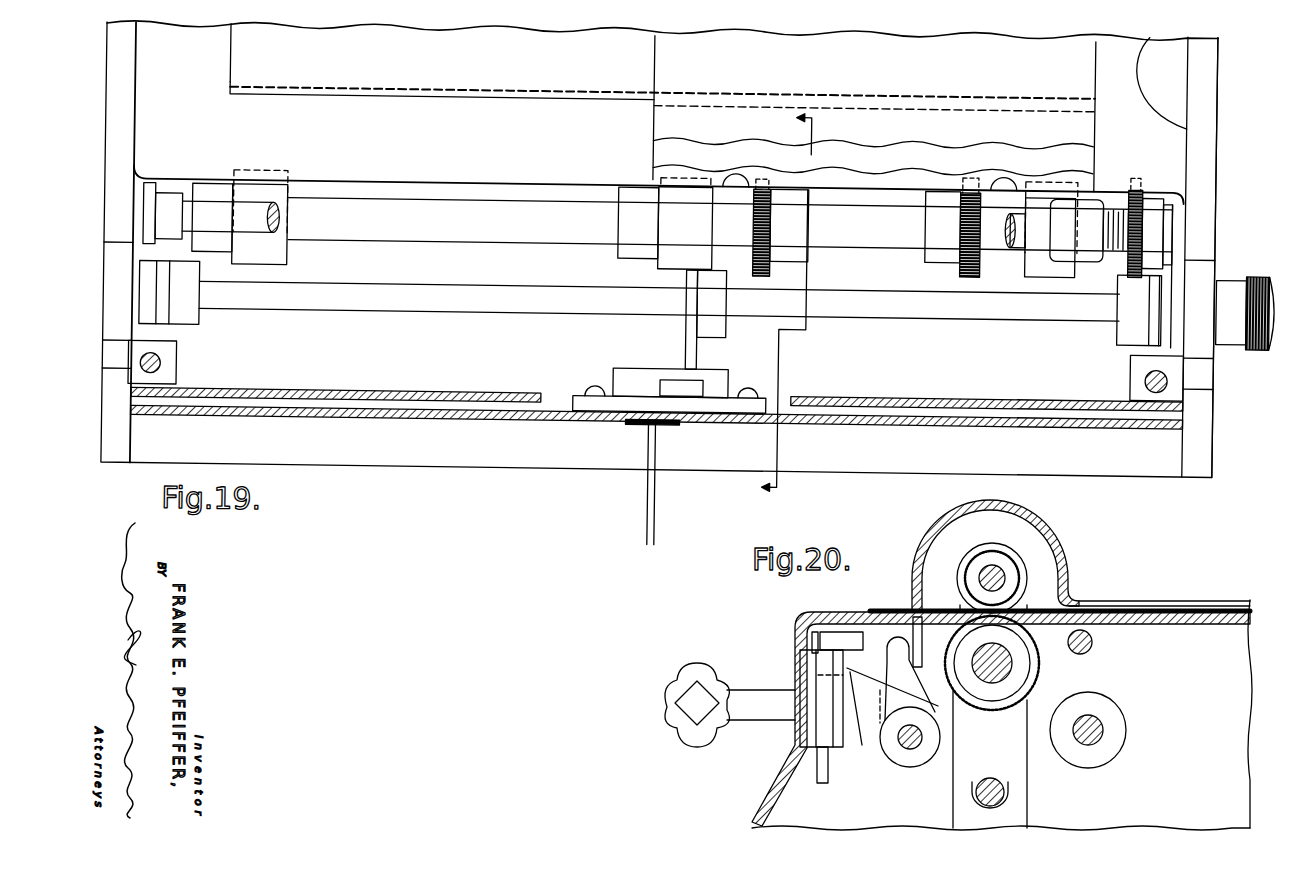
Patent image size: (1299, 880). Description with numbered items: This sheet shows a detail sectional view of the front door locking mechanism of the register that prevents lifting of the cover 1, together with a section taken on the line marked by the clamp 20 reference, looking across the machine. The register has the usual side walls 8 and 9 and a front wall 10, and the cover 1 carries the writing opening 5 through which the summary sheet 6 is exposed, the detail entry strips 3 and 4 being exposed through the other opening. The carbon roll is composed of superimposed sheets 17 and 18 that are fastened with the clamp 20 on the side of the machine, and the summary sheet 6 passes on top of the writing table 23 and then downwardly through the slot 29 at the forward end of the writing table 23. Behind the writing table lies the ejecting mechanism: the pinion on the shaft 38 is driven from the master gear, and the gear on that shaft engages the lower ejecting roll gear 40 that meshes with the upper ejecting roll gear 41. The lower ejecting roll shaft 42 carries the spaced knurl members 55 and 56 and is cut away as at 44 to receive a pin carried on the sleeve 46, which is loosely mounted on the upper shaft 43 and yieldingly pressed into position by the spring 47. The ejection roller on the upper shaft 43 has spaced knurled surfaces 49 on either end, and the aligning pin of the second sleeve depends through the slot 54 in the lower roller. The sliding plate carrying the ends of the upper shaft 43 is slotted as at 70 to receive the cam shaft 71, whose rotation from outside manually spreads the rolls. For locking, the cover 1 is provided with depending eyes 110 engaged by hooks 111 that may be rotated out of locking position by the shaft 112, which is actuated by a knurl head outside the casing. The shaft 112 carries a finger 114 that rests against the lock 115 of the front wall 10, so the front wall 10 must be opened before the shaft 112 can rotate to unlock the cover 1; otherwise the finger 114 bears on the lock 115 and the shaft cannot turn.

In FIG. 20, the cover 1 is at (1196, 602).
In FIG. 19, the detail entry strip 3 is at (670, 115).
In FIG. 20, the detail entry strip 3 is at (918, 608).
In FIG. 19, the detail entry strip 4 is at (662, 146).
In FIG. 20, the detail entry strip 4 is at (905, 612).
In FIG. 20, the writing opening 5 is at (1172, 602).
In FIG. 19, the summary sheet 6 is at (462, 68).
In FIG. 20, the summary sheet 6 is at (1104, 656).
In FIG. 19, the side wall 8 is at (1205, 404).
In FIG. 19, the side wall 9 is at (122, 140).
In FIG. 20, the side wall 9 is at (1222, 773).
In FIG. 19, the front wall 10 is at (562, 452).
In FIG. 20, the front wall 10 is at (777, 784).
In FIG. 20, the carbon sheet 17 is at (1083, 682).
In FIG. 20, the carbon sheet 18 is at (1088, 625).
In FIG. 19, the clamp 20 is at (796, 302).
In FIG. 19, the writing table 23 is at (378, 151).
In FIG. 20, the writing table 23 is at (1213, 627).
In FIG. 19, the slot 29 is at (320, 90).
In FIG. 20, the shaft 38 is at (1103, 730).
In FIG. 19, the lower ejecting roll gear 40 is at (1148, 250).
In FIG. 19, the upper ejecting roll gear 41 is at (1143, 215).
In FIG. 19, the lower ejecting roll shaft 42 is at (572, 216).
In FIG. 20, the lower ejecting roll shaft 42 is at (1002, 685).
In FIG. 19, the upper shaft 43 is at (1043, 237).
In FIG. 20, the upper shaft 43 is at (1005, 580).
In FIG. 19, the cut away 44 is at (1007, 250).
In FIG. 19, the sleeve 46 is at (1090, 237).
In FIG. 19, the spring 47 is at (1133, 198).
In FIG. 20, the knurled surface 49 is at (1000, 568).
In FIG. 19, the slot 54 is at (722, 214).
In FIG. 19, the knurl member 55 is at (770, 223).
In FIG. 20, the knurl member 55 is at (1033, 684).
In FIG. 19, the knurl member 56 is at (975, 208).
In FIG. 20, the slot 70 is at (1008, 818).
In FIG. 20, the cam shaft 71 is at (1005, 790).
In FIG. 20, the depending eye 110 is at (923, 661).
In FIG. 19, the hook 111 is at (168, 303).
In FIG. 20, the hook 111 is at (920, 678).
In FIG. 19, the shaft 112 is at (872, 293).
In FIG. 20, the shaft 112 is at (908, 750).
In FIG. 19, the finger 114 is at (690, 330).
In FIG. 20, the finger 114 is at (890, 719).
In FIG. 19, the lock 115 is at (727, 366).
In FIG. 20, the lock 115 is at (822, 686).